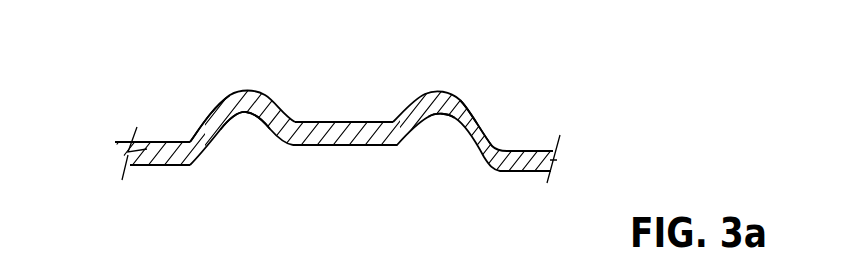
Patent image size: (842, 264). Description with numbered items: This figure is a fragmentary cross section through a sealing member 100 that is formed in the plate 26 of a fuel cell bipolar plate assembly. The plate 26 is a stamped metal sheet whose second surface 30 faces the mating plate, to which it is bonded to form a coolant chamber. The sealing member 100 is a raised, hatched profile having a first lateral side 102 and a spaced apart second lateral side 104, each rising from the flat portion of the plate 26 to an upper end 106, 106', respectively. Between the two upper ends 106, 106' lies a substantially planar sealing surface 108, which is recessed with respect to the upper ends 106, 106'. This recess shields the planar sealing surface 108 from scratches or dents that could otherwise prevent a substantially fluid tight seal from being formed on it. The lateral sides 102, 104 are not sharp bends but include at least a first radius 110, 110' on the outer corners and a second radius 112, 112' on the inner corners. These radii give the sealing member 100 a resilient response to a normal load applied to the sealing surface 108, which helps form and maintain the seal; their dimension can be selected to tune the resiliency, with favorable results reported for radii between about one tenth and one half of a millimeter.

The sealing member 100 is at (574, 67).
The plate 26 is at (128, 143).
The second surface 30 is at (153, 166).
The first lateral side 102 is at (202, 122).
The second lateral side 104 is at (483, 113).
The upper end 106 is at (257, 84).
The upper end 106' is at (429, 74).
The planar sealing surface 108 is at (342, 122).
The first radius 110 is at (181, 118).
The first radius 110' is at (510, 123).
The second radius 112 is at (245, 144).
The second radius 112' is at (440, 146).